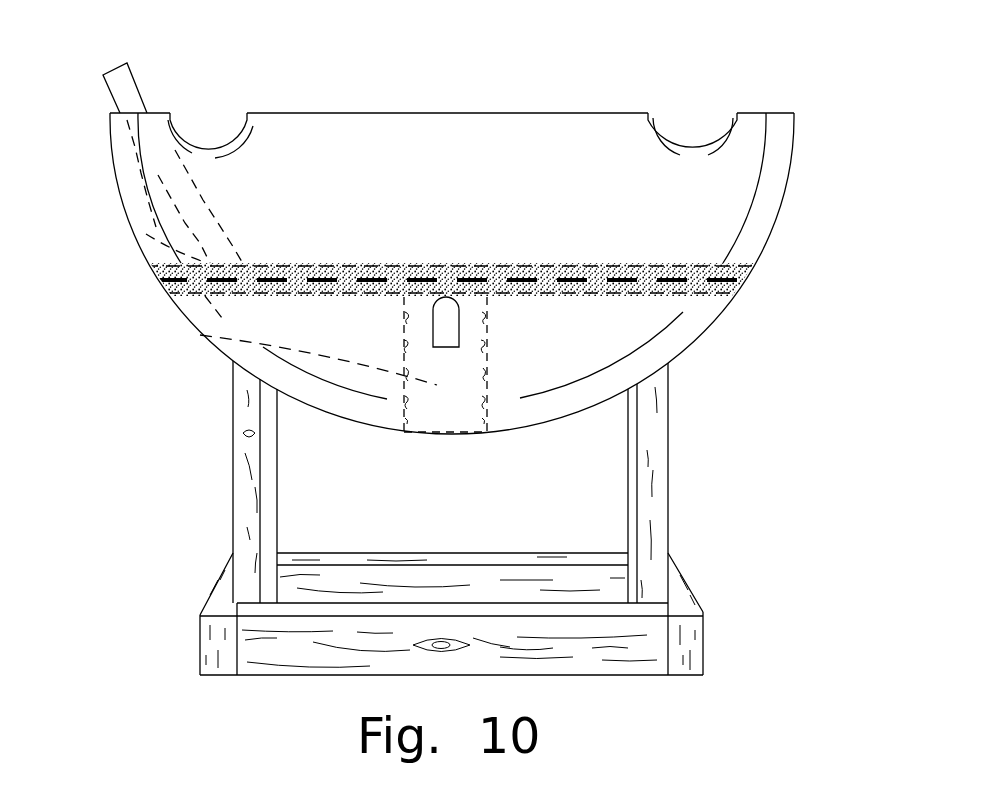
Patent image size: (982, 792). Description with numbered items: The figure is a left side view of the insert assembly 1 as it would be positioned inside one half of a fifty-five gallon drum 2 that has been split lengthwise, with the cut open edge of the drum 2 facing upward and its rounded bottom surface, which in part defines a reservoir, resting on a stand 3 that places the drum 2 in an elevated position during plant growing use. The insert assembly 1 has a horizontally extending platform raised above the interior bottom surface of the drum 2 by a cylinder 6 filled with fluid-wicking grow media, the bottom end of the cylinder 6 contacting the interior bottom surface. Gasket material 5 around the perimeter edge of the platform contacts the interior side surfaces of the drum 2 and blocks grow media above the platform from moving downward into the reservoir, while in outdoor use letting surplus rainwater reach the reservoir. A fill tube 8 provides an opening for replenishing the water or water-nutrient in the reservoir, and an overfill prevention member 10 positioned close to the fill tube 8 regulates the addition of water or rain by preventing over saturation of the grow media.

The insert assembly 1 is at (505, 265).
The drum 2 is at (710, 317).
The stand 3 is at (658, 437).
The gasket material 5 is at (130, 233).
The cylinder 6 is at (200, 335).
The fill tube 8 is at (120, 78).
The overfill prevention member 10 is at (450, 320).